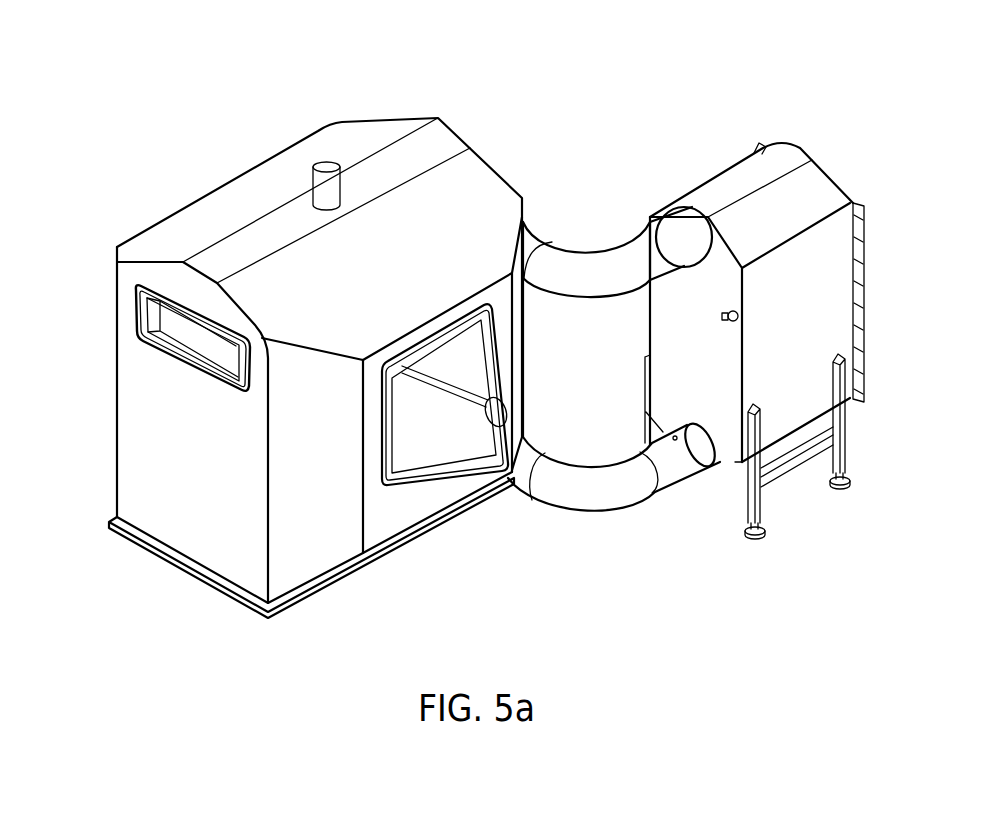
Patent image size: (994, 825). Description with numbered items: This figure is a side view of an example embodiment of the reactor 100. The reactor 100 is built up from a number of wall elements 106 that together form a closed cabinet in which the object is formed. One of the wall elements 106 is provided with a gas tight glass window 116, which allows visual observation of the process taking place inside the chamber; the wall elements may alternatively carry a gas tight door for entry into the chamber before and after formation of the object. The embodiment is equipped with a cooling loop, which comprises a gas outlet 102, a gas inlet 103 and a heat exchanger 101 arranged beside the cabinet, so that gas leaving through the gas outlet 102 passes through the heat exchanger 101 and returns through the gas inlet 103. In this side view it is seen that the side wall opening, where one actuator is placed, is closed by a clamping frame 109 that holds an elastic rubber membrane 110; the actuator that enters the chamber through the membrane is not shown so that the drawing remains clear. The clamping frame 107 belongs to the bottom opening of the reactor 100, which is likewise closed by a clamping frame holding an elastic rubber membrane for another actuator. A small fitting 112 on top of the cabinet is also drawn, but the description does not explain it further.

The reactor 100 is at (240, 174).
The heat exchanger 101 is at (813, 183).
The gas outlet 102 is at (592, 262).
The gas inlet 103 is at (615, 498).
The wall elements 106 is at (272, 277).
The clamping frame 107 is at (316, 592).
The clamping frame 109 is at (387, 486).
The elastic rubber membrane 110 is at (432, 442).
The vent stack 112 is at (331, 167).
The gas tight glass window 116 is at (173, 323).